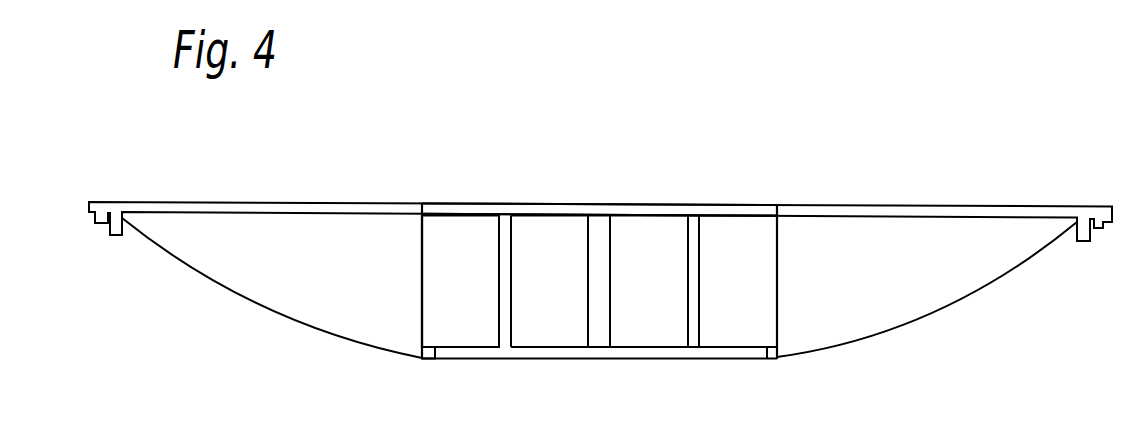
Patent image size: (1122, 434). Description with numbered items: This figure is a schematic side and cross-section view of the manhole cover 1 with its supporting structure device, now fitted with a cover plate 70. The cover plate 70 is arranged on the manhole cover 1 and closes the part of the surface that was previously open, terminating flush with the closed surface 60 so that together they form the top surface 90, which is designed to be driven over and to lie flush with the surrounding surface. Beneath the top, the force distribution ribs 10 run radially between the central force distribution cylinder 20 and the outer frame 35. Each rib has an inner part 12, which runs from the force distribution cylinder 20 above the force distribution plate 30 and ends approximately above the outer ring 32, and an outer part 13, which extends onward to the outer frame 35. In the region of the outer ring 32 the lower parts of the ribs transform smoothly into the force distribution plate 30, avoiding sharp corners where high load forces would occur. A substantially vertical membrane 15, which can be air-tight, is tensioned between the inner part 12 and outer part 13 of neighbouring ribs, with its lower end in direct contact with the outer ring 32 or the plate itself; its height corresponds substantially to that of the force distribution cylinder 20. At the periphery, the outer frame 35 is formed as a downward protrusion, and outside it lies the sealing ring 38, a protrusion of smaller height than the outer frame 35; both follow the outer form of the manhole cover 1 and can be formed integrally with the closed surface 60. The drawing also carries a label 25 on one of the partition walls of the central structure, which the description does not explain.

The manhole cover 1 is at (517, 127).
The force distribution ribs 10 is at (353, 288).
The inner part 12 is at (470, 293).
The outer part 13 is at (318, 333).
The membrane 15 is at (422, 303).
The force distribution cylinder 20 is at (514, 263).
The partition wall 25 is at (612, 272).
The force distribution plate 30 is at (550, 362).
The outer ring 32 is at (422, 360).
The outer frame 35 is at (115, 240).
The sealing ring 38 is at (100, 237).
The closed surface 60 is at (287, 200).
The cover plate 70 is at (650, 203).
The top surface 90 is at (781, 193).